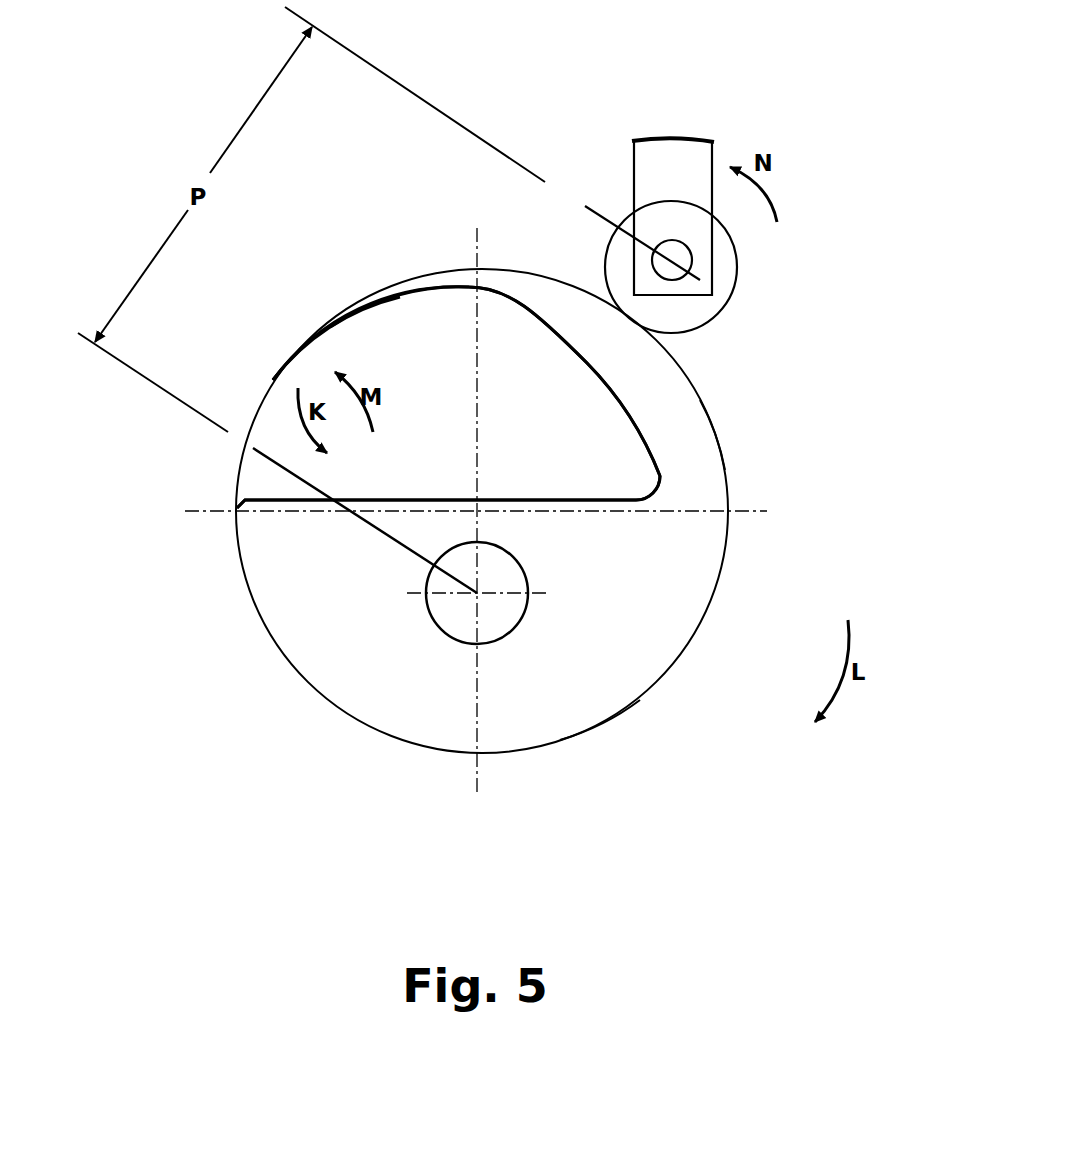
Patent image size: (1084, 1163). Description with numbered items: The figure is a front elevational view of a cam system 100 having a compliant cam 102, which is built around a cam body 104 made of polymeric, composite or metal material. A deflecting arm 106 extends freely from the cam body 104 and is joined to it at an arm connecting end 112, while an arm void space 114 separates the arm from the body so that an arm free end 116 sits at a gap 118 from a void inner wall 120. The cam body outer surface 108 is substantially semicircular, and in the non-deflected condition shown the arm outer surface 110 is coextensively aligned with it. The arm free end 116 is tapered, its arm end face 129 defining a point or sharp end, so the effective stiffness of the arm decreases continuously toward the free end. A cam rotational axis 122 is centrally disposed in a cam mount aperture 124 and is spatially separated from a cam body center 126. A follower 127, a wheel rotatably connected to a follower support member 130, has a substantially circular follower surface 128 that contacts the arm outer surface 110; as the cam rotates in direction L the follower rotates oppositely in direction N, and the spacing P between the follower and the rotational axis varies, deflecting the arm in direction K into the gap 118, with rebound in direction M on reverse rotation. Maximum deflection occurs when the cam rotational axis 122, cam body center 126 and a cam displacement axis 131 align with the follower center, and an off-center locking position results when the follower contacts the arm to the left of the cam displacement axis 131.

The cam system 100 is at (805, 165).
The compliant cam 102 is at (667, 647).
The cam body 104 is at (672, 560).
The deflecting arm 106 is at (437, 292).
The cam body outer surface 108 is at (597, 732).
The arm outer surface 110 is at (722, 440).
The arm connecting end 112 is at (712, 475).
The arm void space 114 is at (567, 421).
The arm free end 116 is at (313, 347).
The gap 118 is at (267, 432).
The void inner wall 120 is at (267, 497).
The cam rotational axis 122 is at (477, 593).
The cam mount aperture 124 is at (437, 578).
The cam body center 126 is at (477, 503).
The follower 127 is at (742, 252).
The follower surface 128 is at (733, 295).
The arm end face 129 is at (273, 379).
The follower support member 130 is at (642, 170).
The cam displacement axis 131 is at (475, 357).